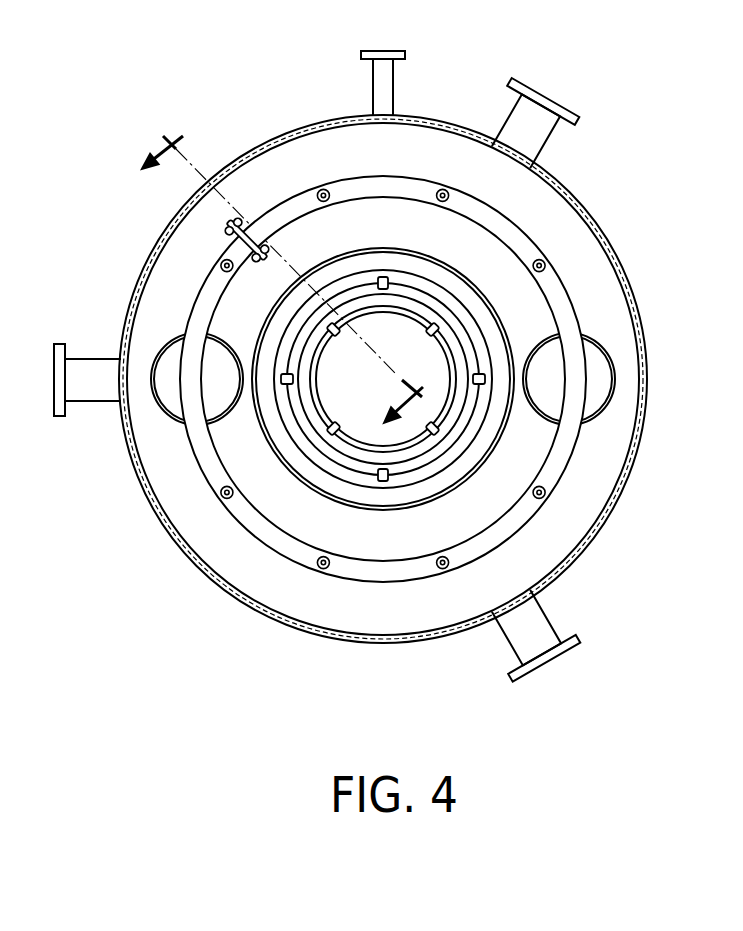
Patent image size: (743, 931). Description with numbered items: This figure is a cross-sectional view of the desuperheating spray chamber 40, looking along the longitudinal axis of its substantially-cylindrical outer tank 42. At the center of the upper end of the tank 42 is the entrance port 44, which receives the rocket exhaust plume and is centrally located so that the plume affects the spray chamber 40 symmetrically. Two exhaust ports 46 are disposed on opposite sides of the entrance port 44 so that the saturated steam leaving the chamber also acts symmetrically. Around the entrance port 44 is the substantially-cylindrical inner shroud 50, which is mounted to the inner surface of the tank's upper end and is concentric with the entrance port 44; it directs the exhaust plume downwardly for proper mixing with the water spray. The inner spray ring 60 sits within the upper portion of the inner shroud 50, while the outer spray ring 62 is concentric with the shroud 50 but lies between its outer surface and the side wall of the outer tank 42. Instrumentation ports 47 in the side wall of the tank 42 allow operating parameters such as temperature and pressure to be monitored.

The desuperheating spray chamber 40 is at (247, 675).
The outer tank 42 is at (605, 551).
The entrance port 44 is at (458, 360).
The exhaust ports 46 is at (160, 406).
The instrumentation ports 47 is at (568, 688).
The inner shroud 50 is at (520, 450).
The inner spray ring 60 is at (456, 268).
The outer spray ring 62 is at (246, 553).